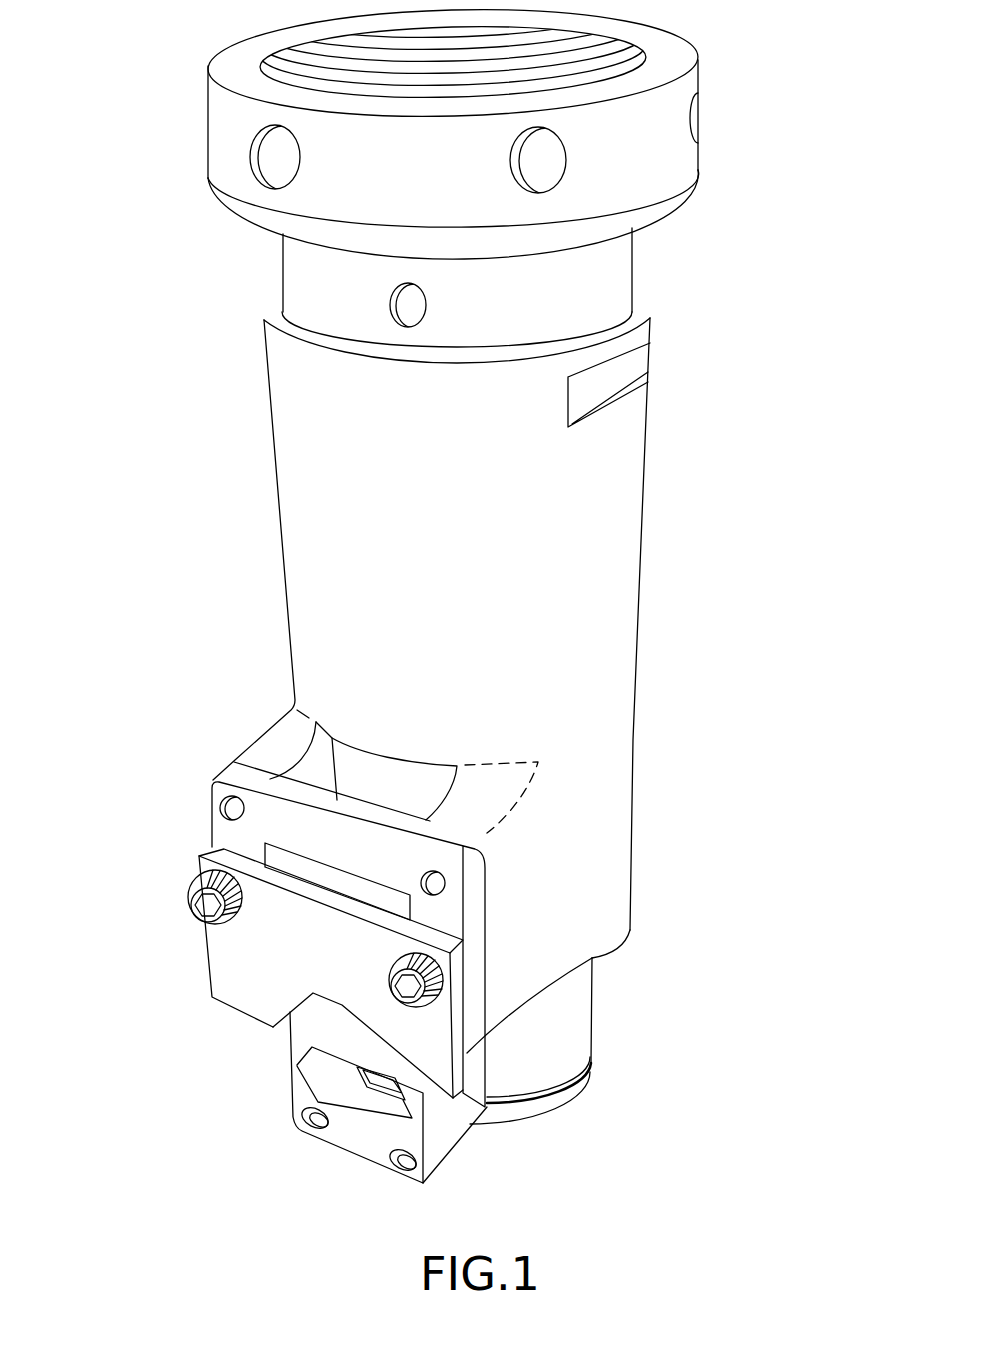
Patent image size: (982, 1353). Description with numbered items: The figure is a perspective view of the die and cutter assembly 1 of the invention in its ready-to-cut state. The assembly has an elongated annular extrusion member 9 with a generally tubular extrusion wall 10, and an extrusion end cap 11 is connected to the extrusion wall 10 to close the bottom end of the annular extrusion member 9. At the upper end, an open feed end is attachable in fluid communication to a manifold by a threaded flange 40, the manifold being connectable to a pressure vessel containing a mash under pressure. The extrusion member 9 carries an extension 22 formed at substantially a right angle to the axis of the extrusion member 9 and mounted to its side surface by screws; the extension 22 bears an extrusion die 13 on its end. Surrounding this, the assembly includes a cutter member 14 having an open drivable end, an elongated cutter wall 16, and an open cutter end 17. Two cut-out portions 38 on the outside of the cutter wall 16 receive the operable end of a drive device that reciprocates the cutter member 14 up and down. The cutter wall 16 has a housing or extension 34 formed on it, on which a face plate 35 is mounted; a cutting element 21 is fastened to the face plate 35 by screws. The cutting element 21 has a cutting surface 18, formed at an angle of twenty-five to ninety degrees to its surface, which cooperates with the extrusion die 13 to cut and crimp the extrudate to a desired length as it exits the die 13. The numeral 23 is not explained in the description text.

The die and cutter assembly 1 is at (200, 270).
The threaded flange 40 is at (672, 158).
The cut-out portions 38 is at (632, 368).
The cutter member 14 is at (274, 611).
The cutter wall 16 is at (612, 676).
The extension 34 is at (258, 748).
The face plate 35 is at (480, 900).
The open cutter end 17 is at (605, 952).
The annular extrusion member 9 is at (563, 1041).
The extrusion end cap 11 is at (560, 1090).
The extrusion wall 10 is at (505, 1085).
The cutting element 21 is at (227, 972).
The cutting surface 18 is at (320, 1012).
The guide surface 23 is at (293, 1107).
The extension 22 is at (440, 1143).
The extrusion die 13 is at (350, 1122).